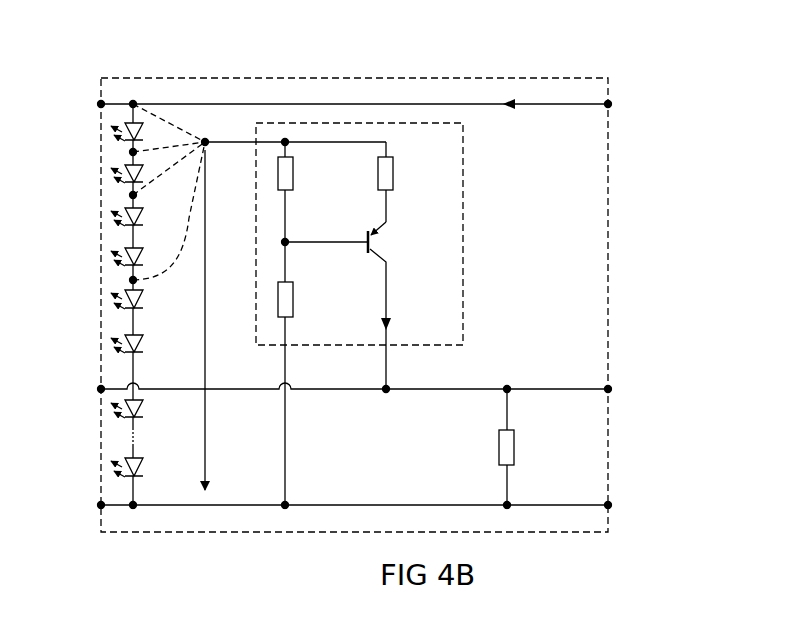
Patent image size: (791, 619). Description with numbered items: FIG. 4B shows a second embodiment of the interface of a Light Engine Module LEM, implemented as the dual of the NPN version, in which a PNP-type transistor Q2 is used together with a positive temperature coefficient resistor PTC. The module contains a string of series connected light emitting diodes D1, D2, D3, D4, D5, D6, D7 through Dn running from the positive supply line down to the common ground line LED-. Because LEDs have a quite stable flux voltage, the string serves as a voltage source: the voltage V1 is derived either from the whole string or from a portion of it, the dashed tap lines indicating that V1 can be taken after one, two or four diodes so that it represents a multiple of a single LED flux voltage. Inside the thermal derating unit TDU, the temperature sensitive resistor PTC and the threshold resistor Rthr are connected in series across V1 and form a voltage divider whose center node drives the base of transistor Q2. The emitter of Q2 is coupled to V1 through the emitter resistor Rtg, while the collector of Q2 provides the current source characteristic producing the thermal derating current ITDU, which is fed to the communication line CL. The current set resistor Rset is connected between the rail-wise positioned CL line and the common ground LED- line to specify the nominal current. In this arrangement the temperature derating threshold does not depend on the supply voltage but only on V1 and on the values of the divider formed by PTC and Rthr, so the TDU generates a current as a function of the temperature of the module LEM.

The light engine module LEM is at (360, 76).
The thermal derating unit TDU is at (463, 240).
The light emitting diode D1 is at (140, 132).
The light emitting diode D2 is at (140, 174).
The light emitting diode D3 is at (140, 217).
The light emitting diode D4 is at (140, 257).
The light emitting diode D5 is at (140, 300).
The light emitting diode D6 is at (140, 344).
The light emitting diode D7 is at (140, 409).
The light emitting diode Dn is at (139, 468).
The voltage source V1 is at (259, 297).
The temperature sensitive resistor PTC is at (304, 191).
The threshold resistor Rthr is at (307, 372).
The emitter resistor Rtg is at (403, 182).
The PNP-type transistor Q2 is at (355, 305).
The thermal derating current ITDU is at (409, 307).
The current set resistor Rset is at (528, 447).
The communication line CL is at (356, 389).
The common ground line LED- is at (352, 505).